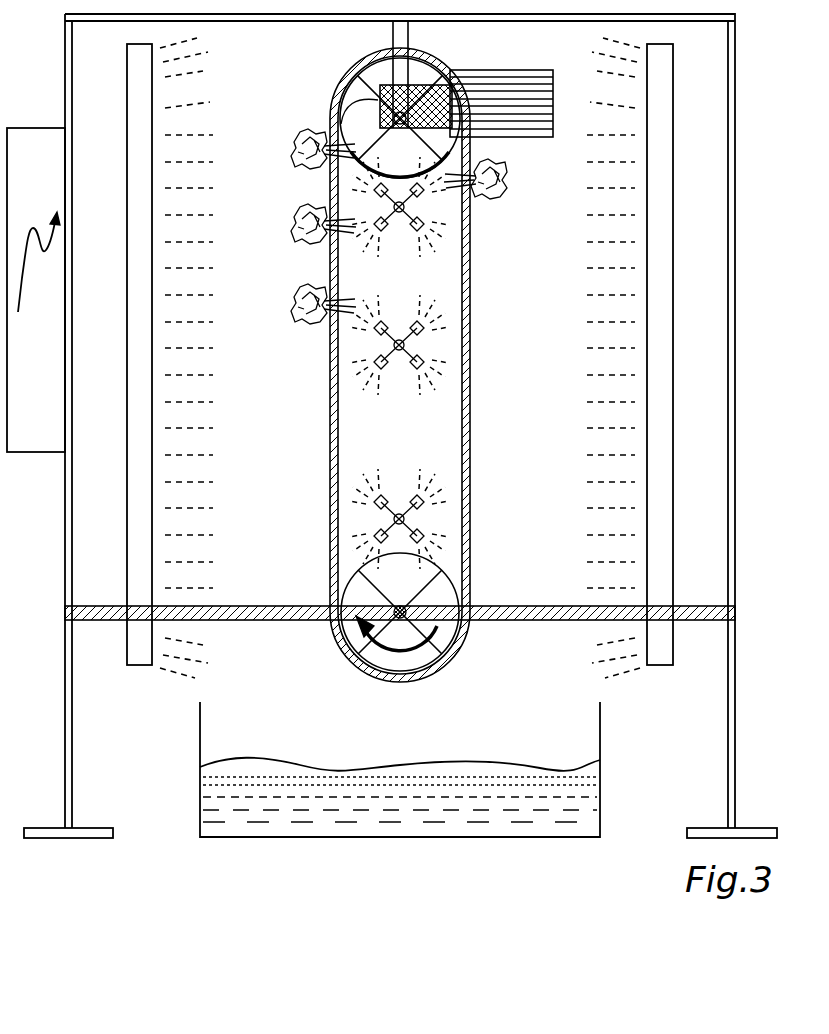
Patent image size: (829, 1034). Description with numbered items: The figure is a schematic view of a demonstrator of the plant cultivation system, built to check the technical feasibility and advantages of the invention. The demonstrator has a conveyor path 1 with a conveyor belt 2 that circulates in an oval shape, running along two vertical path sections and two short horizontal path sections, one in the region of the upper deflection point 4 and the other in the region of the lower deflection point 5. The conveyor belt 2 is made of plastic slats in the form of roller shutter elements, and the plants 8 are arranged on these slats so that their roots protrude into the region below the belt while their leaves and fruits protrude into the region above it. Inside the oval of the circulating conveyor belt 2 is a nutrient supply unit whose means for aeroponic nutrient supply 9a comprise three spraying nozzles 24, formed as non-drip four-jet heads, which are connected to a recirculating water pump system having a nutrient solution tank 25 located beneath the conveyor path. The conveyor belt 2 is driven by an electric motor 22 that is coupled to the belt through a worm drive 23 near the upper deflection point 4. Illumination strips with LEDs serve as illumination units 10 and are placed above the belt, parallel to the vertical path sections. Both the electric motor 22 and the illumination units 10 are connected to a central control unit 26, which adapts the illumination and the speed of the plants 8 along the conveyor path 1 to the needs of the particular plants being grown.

The conveyor path 1 is at (303, 443).
The conveyor belt 2 is at (471, 413).
The upper deflection point 4 is at (430, 53).
The lower deflection point 5 is at (362, 673).
The plants 8 is at (295, 236).
The means for aeroponic nutrient supply 9a is at (383, 406).
The illumination units 10 is at (152, 307).
The electric motor 22 is at (523, 138).
The worm drive 23 is at (330, 110).
The spraying nozzles 24 is at (400, 214).
The nutrient solution tank 25 is at (487, 760).
The central control unit 26 is at (35, 452).